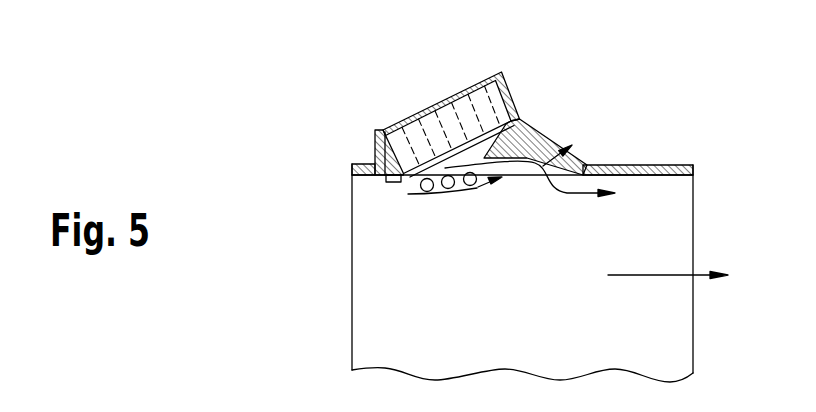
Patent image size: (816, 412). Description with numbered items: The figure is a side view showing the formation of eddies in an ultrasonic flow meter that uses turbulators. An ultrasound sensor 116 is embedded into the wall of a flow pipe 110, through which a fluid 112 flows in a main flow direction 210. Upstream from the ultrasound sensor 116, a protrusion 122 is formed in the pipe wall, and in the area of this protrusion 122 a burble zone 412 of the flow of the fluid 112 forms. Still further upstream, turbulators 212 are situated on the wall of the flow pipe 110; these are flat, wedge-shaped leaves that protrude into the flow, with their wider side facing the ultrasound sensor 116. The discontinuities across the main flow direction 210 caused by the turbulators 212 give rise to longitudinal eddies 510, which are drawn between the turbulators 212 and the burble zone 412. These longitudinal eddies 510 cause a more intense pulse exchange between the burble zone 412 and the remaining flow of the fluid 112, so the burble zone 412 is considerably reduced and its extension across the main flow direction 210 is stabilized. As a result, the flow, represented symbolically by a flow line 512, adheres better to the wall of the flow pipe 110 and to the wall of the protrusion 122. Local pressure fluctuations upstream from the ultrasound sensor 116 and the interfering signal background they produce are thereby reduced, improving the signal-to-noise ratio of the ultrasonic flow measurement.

The flow pipe 110 is at (668, 165).
The fluid 112 is at (388, 332).
The ultrasound sensor 116 is at (460, 122).
The protrusion 122 is at (566, 152).
The main flow direction 210 is at (662, 273).
The turbulators 212 is at (390, 183).
The burble zone 412 is at (533, 127).
The longitudinal eddies 510 is at (443, 196).
The flow line 512 is at (553, 188).